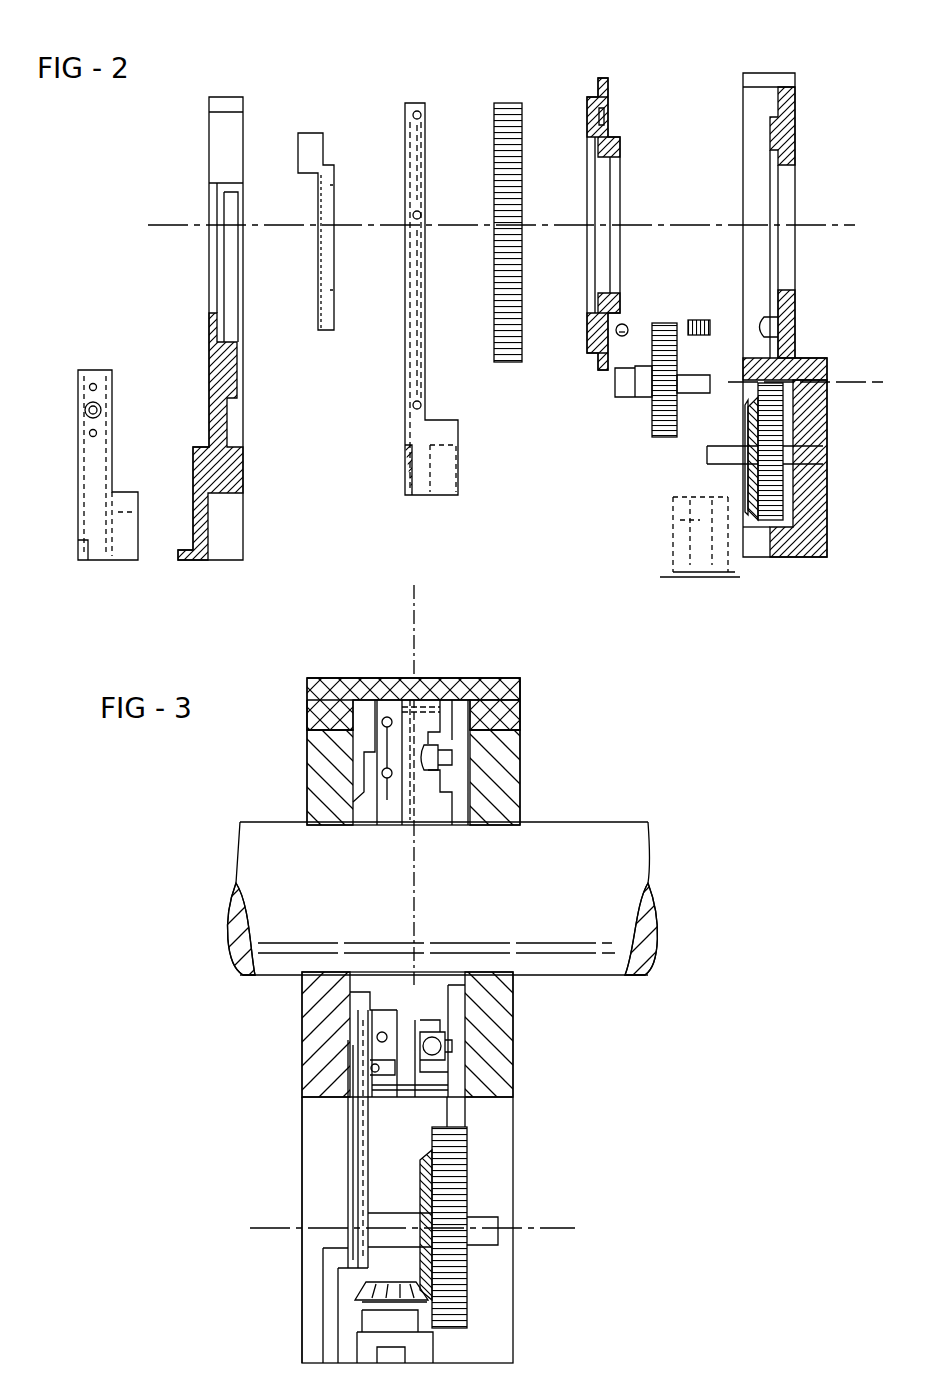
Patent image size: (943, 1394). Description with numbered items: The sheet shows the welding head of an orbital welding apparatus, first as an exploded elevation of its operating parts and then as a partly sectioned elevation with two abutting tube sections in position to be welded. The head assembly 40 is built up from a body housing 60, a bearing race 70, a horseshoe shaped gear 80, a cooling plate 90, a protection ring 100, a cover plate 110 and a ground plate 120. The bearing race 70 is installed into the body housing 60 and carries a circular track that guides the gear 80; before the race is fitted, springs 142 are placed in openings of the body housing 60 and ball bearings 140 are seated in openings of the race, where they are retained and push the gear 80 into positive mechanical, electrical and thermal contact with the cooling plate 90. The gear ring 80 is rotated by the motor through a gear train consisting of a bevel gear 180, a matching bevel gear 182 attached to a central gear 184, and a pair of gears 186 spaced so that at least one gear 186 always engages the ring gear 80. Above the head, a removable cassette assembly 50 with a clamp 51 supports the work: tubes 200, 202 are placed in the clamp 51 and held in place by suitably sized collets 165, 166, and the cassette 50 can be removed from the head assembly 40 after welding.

In FIG. 2, the head assembly 40 is at (57, 266).
In FIG. 3, the cassette assembly 50 is at (530, 744).
In FIG. 3, the clamp 51 is at (318, 698).
In FIG. 2, the body housing 60 is at (774, 68).
In FIG. 3, the body housing 60 is at (520, 1111).
In FIG. 2, the bearing race 70 is at (611, 70).
In FIG. 2, the horseshoe shaped gear 80 is at (509, 101).
In FIG. 3, the horseshoe shaped gear 80 is at (440, 742).
In FIG. 2, the cooling plate 90 is at (416, 101).
In FIG. 3, the cooling plate 90 is at (378, 700).
In FIG. 2, the protection ring 100 is at (312, 129).
In FIG. 2, the cover plate 110 is at (225, 97).
In FIG. 2, the ground plate 120 is at (96, 368).
In FIG. 3, the ground plate 120 is at (292, 1156).
In FIG. 2, the ball bearing 140 is at (626, 324).
In FIG. 3, the ball bearing 140 is at (520, 680).
In FIG. 2, the spring 142 is at (700, 318).
In FIG. 3, the collet 165 is at (303, 757).
In FIG. 3, the collet 166 is at (302, 1020).
In FIG. 2, the bevel gear 180 is at (680, 500).
In FIG. 3, the bevel gear 180 is at (360, 1285).
In FIG. 2, the matching bevel gear 182 is at (748, 487).
In FIG. 3, the matching bevel gear 182 is at (420, 1160).
In FIG. 2, the central gear 184 is at (777, 545).
In FIG. 3, the central gear 184 is at (467, 1166).
In FIG. 2, the gear 186 is at (650, 432).
In FIG. 3, the tube 200 is at (245, 838).
In FIG. 3, the tube 202 is at (620, 878).